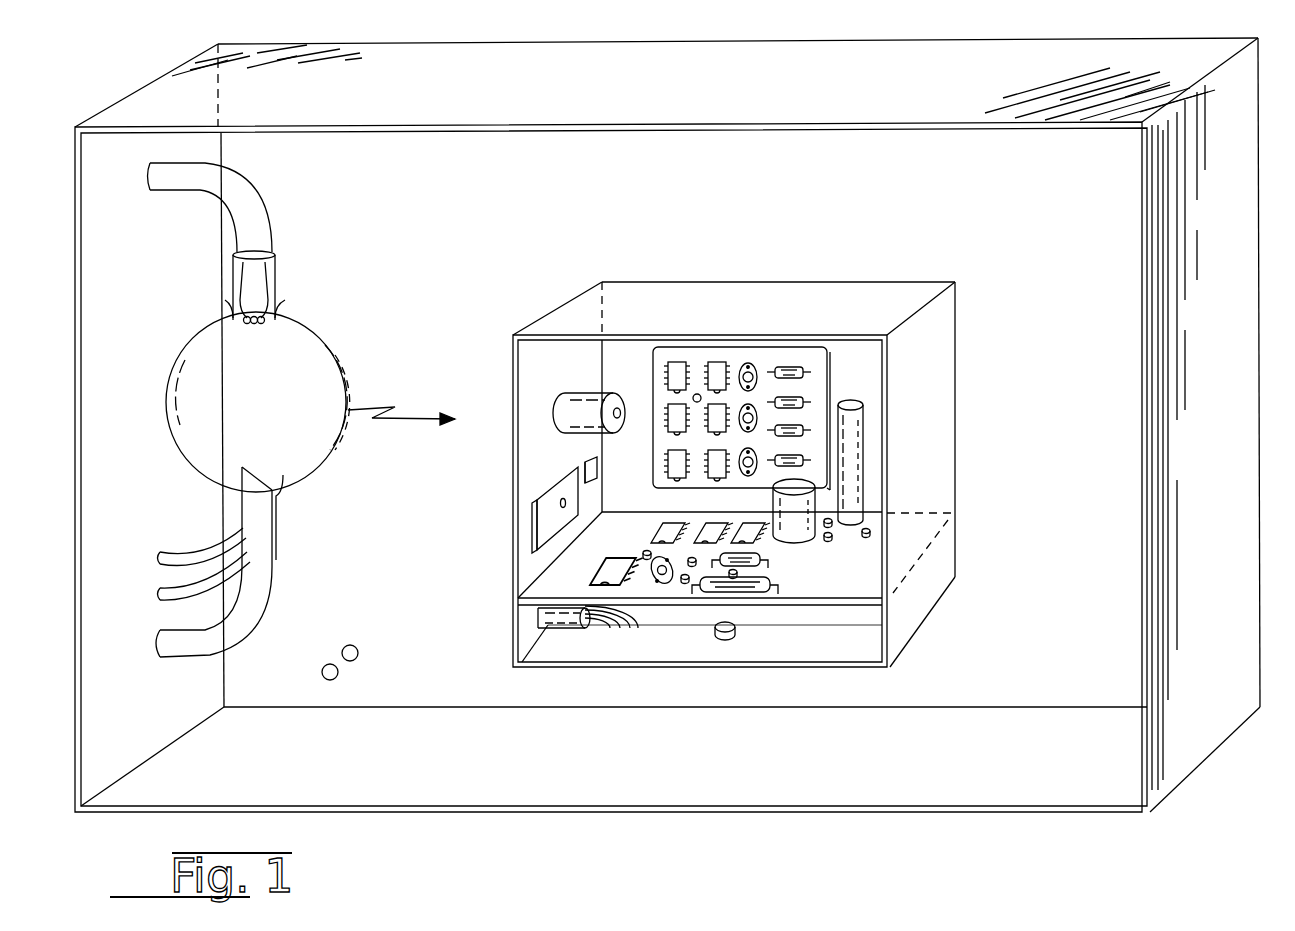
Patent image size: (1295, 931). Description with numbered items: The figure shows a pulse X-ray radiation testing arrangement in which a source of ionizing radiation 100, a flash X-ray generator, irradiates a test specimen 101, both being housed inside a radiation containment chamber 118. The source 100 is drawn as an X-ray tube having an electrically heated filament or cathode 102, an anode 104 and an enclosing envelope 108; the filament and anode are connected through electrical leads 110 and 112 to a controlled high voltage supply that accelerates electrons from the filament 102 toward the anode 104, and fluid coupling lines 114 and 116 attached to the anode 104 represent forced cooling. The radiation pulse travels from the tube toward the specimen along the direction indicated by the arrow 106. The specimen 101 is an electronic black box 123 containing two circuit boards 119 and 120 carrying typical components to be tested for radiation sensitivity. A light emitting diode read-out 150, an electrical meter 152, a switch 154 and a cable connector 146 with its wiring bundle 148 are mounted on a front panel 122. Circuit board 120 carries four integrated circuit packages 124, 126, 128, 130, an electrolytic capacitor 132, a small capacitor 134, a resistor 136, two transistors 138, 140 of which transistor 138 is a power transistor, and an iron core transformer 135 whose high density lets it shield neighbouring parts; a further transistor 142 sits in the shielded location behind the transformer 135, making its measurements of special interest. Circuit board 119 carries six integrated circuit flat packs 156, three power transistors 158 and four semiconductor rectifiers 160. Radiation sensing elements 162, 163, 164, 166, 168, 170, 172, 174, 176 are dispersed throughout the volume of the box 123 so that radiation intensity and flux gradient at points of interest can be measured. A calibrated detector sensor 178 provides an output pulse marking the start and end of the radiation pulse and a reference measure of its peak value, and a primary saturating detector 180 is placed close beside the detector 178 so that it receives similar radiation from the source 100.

The source of ionizing radiation 100 is at (262, 409).
The test specimen 101 is at (777, 232).
The filament or cathode 102 is at (268, 301).
The anode 104 is at (224, 500).
The emission arrow / output direction 106 is at (400, 418).
The enclosing envelope 108 is at (187, 348).
The electrical lead 110 is at (258, 194).
The electrical lead 112 is at (274, 604).
The fluid coupling line 114 is at (182, 598).
The fluid coupling line 116 is at (178, 556).
The radiation containment chamber 118 is at (1208, 760).
The circuit board 119 is at (829, 377).
The circuit board 120 is at (818, 606).
The front panel 122 is at (540, 318).
The box 123 is at (885, 281).
The integrated circuit package 124 is at (666, 524).
The integrated circuit package 126 is at (711, 524).
The integrated circuit package 128 is at (758, 524).
The integrated circuit package 130 is at (598, 574).
The electrolytic capacitor 132 is at (863, 437).
The small capacitor 134 is at (762, 558).
The iron core transformer 135 is at (816, 505).
The resistor 136 is at (772, 584).
The power transistor 138 is at (660, 585).
The transistor 140 is at (684, 583).
The transistor 142 is at (834, 541).
The cable connector 146 is at (538, 617).
The wiring bundle 148 is at (598, 628).
The light emitting diode read-out 150 is at (538, 537).
The electrical meter 152 is at (569, 400).
The switch 154 is at (588, 465).
The integrated circuit flat packs 156 is at (716, 361).
The power transistors 158 is at (748, 362).
The semiconductor rectifiers 160 is at (790, 367).
The radiation sensing element 162 is at (560, 497).
The radiation sensing element 163 is at (692, 566).
The radiation sensing element 164 is at (614, 410).
The radiation sensing element 166 is at (645, 552).
The radiation sensing element 168 is at (737, 636).
The radiation sensing element 170 is at (832, 526).
The radiation sensing element 172 is at (871, 534).
The radiation sensing element 174 is at (693, 398).
The radiation sensing element 176 is at (735, 578).
The calibrated detector sensor 178 is at (338, 678).
The primary saturating detector 180 is at (357, 648).